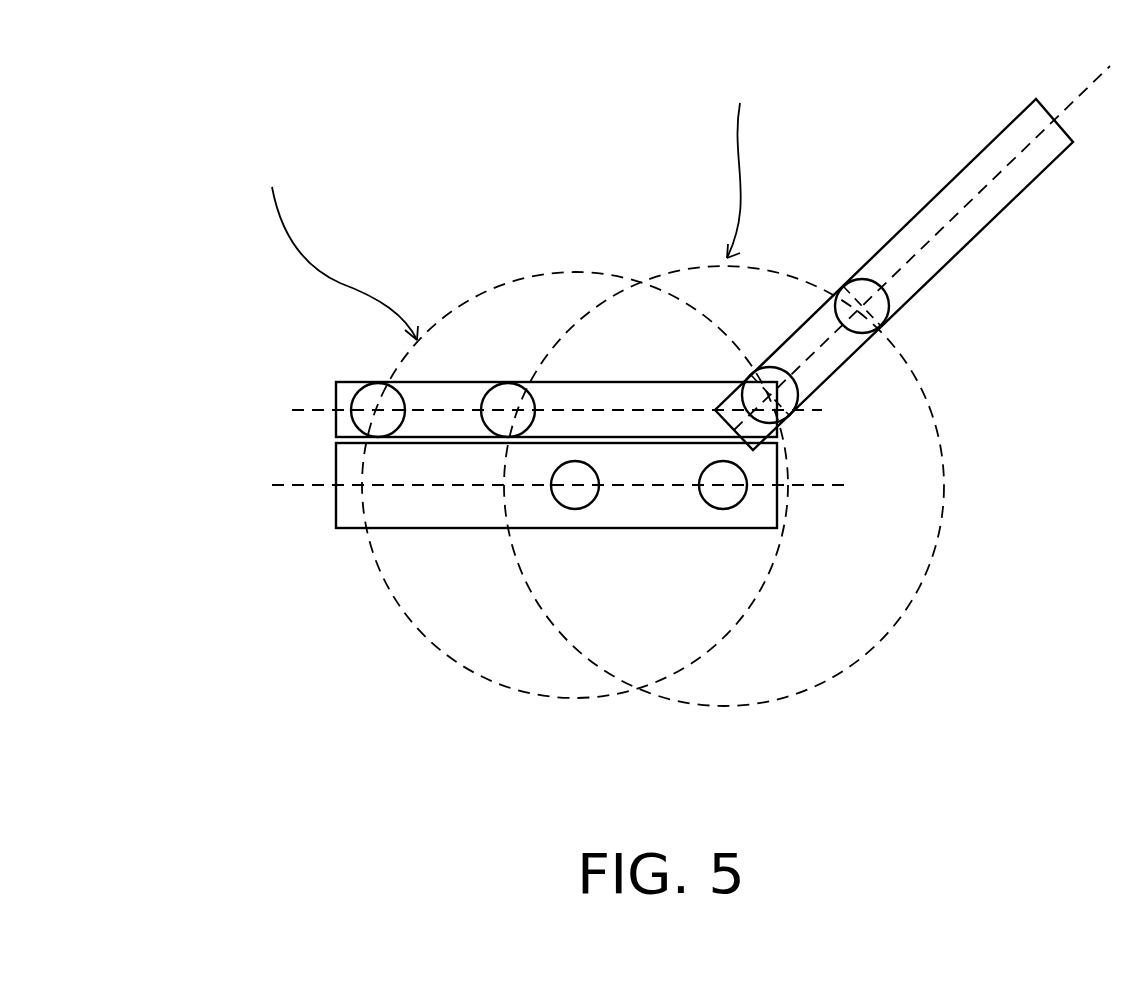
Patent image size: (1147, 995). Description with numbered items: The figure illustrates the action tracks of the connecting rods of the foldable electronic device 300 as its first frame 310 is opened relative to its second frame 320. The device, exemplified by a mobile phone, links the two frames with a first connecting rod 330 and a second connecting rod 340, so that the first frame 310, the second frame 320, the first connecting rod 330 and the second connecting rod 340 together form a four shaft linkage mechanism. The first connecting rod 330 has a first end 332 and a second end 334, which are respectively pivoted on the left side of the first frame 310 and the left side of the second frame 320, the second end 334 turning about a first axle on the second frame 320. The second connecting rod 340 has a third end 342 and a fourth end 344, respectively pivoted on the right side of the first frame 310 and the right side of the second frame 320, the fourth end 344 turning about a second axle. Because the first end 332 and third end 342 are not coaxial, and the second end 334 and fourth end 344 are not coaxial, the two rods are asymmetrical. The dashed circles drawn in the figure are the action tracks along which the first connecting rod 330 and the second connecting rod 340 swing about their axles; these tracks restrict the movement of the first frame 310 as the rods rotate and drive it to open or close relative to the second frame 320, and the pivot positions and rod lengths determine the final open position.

The foldable electronic device 300 is at (977, 568).
The first frame 310 is at (340, 397).
The second frame 320 is at (340, 452).
The first connecting rod 330 is at (630, 150).
The first end 332 is at (505, 382).
The second end 334 is at (708, 462).
The second connecting rod 340 is at (488, 734).
The third end 342 is at (393, 438).
The fourth end 344 is at (557, 494).